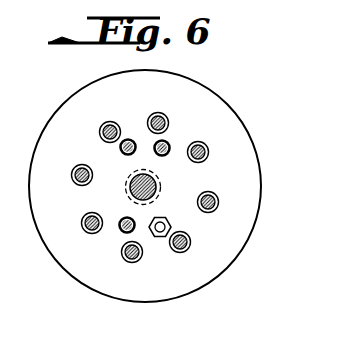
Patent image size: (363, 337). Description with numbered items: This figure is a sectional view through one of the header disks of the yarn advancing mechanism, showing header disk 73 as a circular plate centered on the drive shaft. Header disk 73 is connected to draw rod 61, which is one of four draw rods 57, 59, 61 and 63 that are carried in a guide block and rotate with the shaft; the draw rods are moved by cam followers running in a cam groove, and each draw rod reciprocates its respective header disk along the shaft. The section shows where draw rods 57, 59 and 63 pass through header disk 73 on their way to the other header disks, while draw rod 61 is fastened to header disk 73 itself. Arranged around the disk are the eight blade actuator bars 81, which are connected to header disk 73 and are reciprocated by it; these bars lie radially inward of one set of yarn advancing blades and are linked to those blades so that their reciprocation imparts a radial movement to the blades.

The header disk 73 is at (248, 163).
The blade actuator bars 81 is at (78, 164).
The draw rod 57 is at (168, 143).
The draw rod 59 is at (120, 150).
The draw rod 63 is at (124, 217).
The draw rod 61 is at (164, 218).